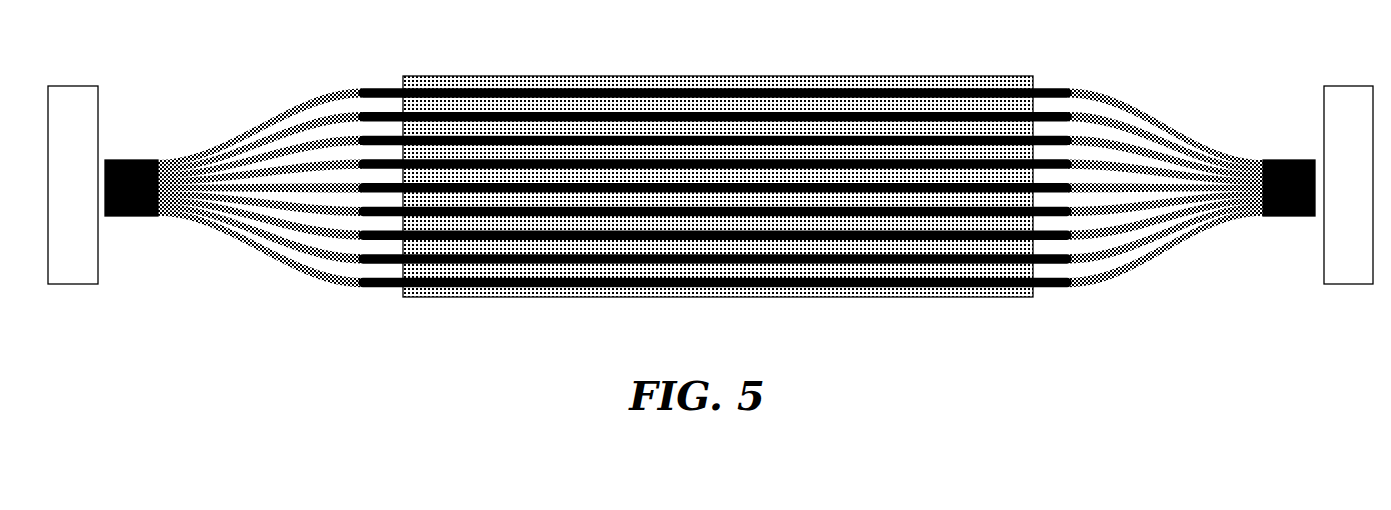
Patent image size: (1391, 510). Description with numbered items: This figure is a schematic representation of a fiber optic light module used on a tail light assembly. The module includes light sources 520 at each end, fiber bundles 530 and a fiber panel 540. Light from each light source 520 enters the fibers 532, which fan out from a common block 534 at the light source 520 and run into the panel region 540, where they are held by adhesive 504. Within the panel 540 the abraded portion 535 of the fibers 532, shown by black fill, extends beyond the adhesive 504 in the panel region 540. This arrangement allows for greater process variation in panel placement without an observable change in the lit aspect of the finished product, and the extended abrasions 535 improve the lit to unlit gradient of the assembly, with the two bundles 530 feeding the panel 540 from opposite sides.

The light source 520 is at (92, 203).
The fiber connector 534 is at (137, 217).
The fiber bundle 530 is at (239, 126).
The fiber 532 is at (475, 283).
The waveguide 535 is at (379, 81).
The fiber panel 540 is at (764, 65).
The adhesive 504 is at (775, 290).